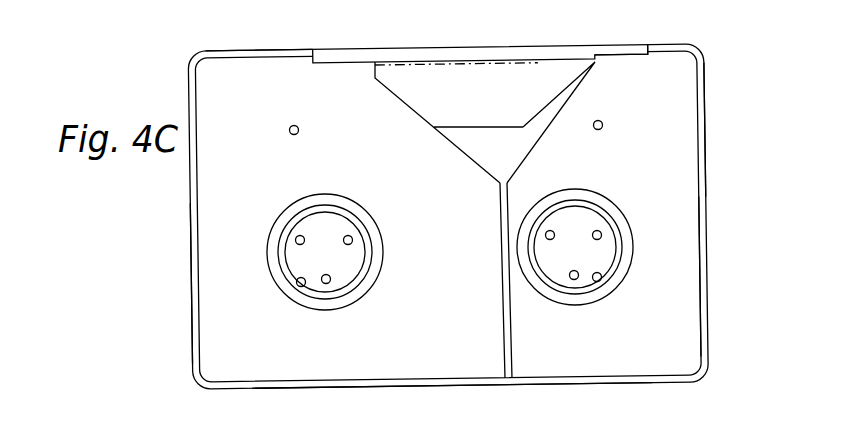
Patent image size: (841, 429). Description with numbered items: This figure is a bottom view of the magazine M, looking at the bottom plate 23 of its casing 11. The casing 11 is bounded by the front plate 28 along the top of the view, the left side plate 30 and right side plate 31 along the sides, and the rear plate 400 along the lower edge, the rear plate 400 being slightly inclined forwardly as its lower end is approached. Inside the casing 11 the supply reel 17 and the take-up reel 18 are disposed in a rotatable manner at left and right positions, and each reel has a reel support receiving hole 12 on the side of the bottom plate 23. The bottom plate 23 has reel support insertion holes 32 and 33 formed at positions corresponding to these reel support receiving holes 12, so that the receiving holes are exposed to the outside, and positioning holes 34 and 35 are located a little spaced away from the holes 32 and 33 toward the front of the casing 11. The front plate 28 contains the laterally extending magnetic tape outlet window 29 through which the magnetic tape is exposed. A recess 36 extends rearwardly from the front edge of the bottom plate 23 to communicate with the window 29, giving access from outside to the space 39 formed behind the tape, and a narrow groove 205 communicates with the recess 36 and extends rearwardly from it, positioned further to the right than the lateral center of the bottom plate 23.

The magazine M is at (205, 44).
The casing 11 is at (193, 189).
The reel support receiving hole 12 is at (298, 284).
The supply reel 17 is at (357, 262).
The take-up reel 18 is at (607, 260).
The bottom plate 23 is at (689, 134).
The front plate 28 is at (264, 50).
The magnetic tape outlet window 29 is at (635, 53).
The left side plate 30 is at (191, 254).
The right side plate 31 is at (706, 228).
The reel support insertion hole 32 is at (363, 215).
The reel support insertion hole 33 is at (612, 212).
The positioning hole 34 is at (297, 134).
The positioning hole 35 is at (599, 130).
The recess 36 is at (488, 125).
The space 39 is at (512, 75).
The narrow groove 205 is at (511, 324).
The rear plate 400 is at (347, 381).